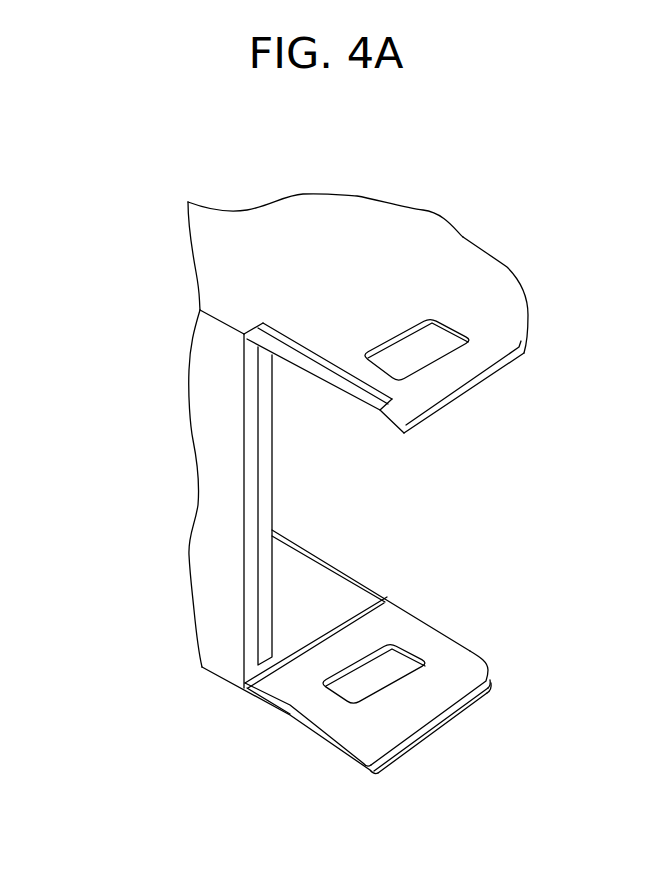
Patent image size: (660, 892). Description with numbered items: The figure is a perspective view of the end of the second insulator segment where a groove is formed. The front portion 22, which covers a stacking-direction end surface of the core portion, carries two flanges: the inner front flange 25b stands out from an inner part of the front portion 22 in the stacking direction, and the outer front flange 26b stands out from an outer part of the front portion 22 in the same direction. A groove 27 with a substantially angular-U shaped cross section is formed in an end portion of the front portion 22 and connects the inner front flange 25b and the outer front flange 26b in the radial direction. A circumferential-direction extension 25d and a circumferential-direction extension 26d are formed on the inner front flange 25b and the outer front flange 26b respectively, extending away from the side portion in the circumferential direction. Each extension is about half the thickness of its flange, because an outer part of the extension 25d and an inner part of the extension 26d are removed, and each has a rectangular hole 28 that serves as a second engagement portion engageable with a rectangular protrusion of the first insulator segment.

The front portion 22 is at (218, 516).
The inner front flange 25b is at (308, 577).
The circumferential-direction extension 25d is at (403, 702).
The outer front flange 26b is at (207, 240).
The circumferential-direction extension 26d is at (490, 296).
The groove 27 is at (266, 482).
The rectangular hole 28 is at (436, 358).